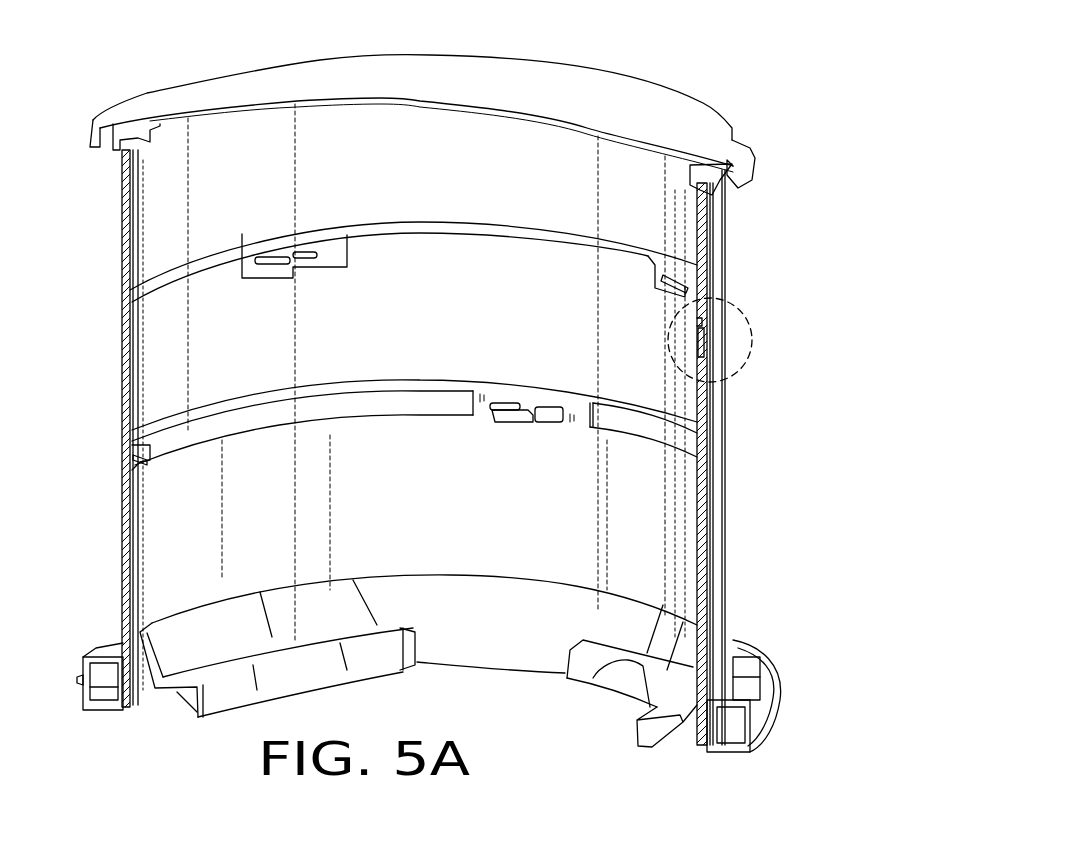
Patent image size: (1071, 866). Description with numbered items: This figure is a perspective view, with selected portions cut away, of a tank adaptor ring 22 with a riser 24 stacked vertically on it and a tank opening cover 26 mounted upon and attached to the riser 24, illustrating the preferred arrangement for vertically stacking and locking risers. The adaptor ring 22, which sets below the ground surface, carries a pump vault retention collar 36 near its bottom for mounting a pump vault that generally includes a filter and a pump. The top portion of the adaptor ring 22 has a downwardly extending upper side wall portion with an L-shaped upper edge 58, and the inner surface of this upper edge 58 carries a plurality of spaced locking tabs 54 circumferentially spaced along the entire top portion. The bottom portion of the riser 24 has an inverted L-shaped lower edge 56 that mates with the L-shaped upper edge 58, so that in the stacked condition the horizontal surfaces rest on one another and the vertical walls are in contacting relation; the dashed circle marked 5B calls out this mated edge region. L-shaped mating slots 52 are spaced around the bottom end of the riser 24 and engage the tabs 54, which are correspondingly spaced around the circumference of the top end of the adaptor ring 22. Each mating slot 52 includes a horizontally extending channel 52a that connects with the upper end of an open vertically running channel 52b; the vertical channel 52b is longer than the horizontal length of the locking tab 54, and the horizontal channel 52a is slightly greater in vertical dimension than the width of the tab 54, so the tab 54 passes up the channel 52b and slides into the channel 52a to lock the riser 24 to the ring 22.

The tank adaptor ring 22 is at (727, 630).
The riser 24 is at (720, 217).
The tank opening cover 26 is at (658, 97).
The pump vault retention collar 36 is at (640, 660).
The mating slot 52 is at (469, 322).
The horizontally extending channel 52a is at (537, 421).
The vertically running channel 52b is at (553, 421).
The locking tab 54 is at (302, 253).
The inverted L-shaped lower edge 56 is at (697, 323).
The L-shaped upper edge 58 is at (700, 345).
The detail view callout 5B is at (750, 352).